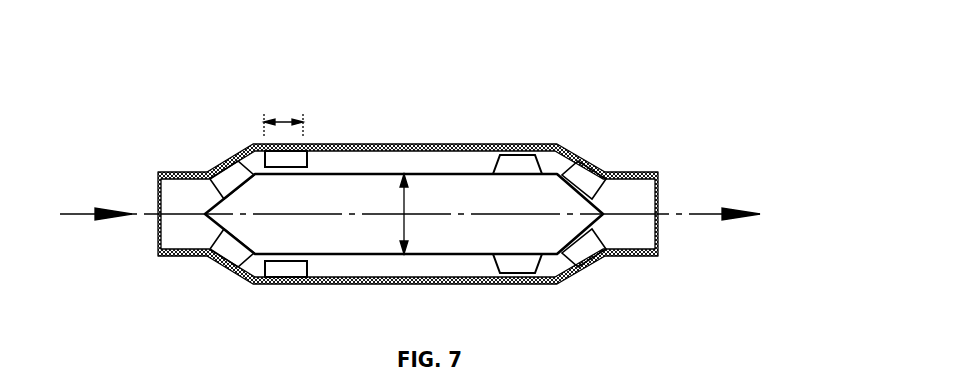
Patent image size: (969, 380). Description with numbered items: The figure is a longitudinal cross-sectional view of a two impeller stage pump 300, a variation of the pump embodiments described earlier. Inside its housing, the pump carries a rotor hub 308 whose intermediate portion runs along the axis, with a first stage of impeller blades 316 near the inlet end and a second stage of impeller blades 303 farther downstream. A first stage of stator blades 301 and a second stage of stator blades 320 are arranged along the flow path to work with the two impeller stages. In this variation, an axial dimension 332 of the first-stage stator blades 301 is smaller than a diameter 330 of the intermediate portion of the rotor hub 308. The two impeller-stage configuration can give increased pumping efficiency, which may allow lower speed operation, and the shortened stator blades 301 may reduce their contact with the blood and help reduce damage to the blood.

The two impeller stage pump 300 is at (607, 82).
The first stage of stator blades 301 is at (282, 270).
The second stage of impeller blades 303 is at (510, 264).
The rotor hub 308 is at (380, 174).
The first stage of impeller blades 316 is at (234, 248).
The second stage of stator blades 320 is at (582, 258).
The diameter of the intermediate portion of the rotor hub 330 is at (421, 214).
The axial dimension of the first-stage stator blades 332 is at (283, 115).